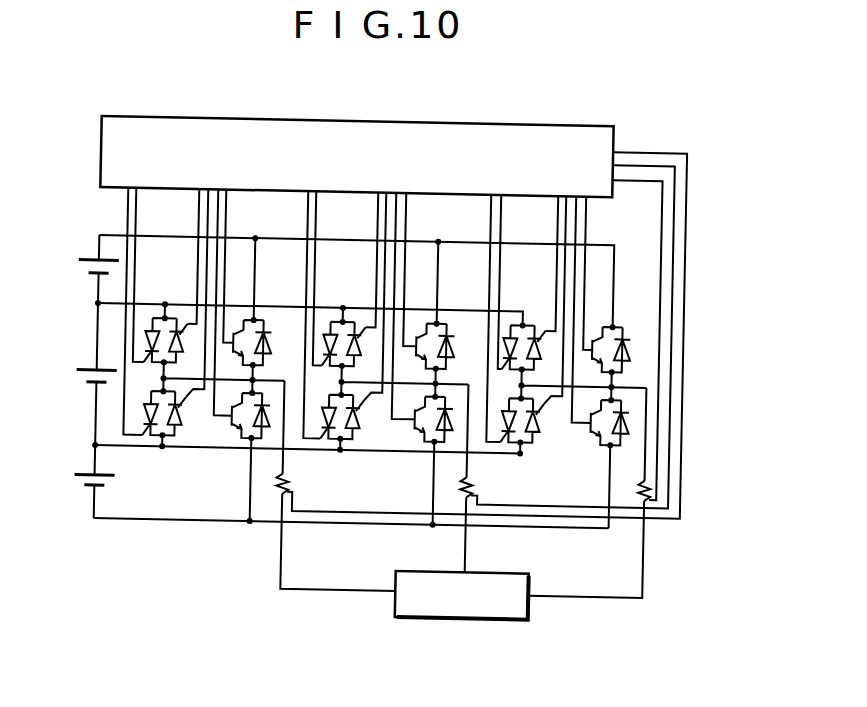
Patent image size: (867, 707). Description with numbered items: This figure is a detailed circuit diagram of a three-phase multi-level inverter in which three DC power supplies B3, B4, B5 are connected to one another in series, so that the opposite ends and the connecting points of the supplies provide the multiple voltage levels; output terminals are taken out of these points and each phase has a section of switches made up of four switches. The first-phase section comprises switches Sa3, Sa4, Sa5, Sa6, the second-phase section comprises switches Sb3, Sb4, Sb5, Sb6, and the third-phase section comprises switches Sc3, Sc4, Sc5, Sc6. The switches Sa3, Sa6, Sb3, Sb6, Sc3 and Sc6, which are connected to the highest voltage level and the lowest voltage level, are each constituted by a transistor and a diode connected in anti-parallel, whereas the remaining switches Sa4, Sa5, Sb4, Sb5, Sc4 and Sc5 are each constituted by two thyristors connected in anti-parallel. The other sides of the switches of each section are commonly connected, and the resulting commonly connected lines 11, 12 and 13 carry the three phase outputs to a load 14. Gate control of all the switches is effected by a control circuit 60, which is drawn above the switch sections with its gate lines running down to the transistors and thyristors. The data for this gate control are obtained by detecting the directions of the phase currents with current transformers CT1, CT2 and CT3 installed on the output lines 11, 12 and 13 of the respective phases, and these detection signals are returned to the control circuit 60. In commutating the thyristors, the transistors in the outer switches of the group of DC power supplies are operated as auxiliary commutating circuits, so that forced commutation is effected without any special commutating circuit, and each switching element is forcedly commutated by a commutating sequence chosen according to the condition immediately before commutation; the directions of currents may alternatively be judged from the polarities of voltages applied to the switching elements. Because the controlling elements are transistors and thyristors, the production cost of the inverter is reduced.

The control circuit 60 is at (469, 116).
The commonly connected line 11 is at (287, 560).
The commonly connected line 12 is at (471, 545).
The commonly connected line 13 is at (649, 567).
The load 14 is at (502, 612).
The DC power supply B3 is at (77, 483).
The DC power supply B4 is at (80, 381).
The DC power supply B5 is at (82, 265).
The switch Sa3 is at (238, 434).
The switch Sa4 is at (162, 433).
The switch Sa5 is at (165, 320).
The switch Sa6 is at (267, 322).
The switch Sb3 is at (420, 438).
The switch Sb4 is at (341, 436).
The switch Sb5 is at (344, 325).
The switch Sb6 is at (450, 326).
The switch Sc3 is at (597, 433).
The switch Sc4 is at (521, 440).
The switch Sc5 is at (526, 328).
The switch Sc6 is at (625, 330).
The current transformer CT1 is at (305, 493).
The current transformer CT2 is at (487, 491).
The current transformer CT3 is at (644, 489).